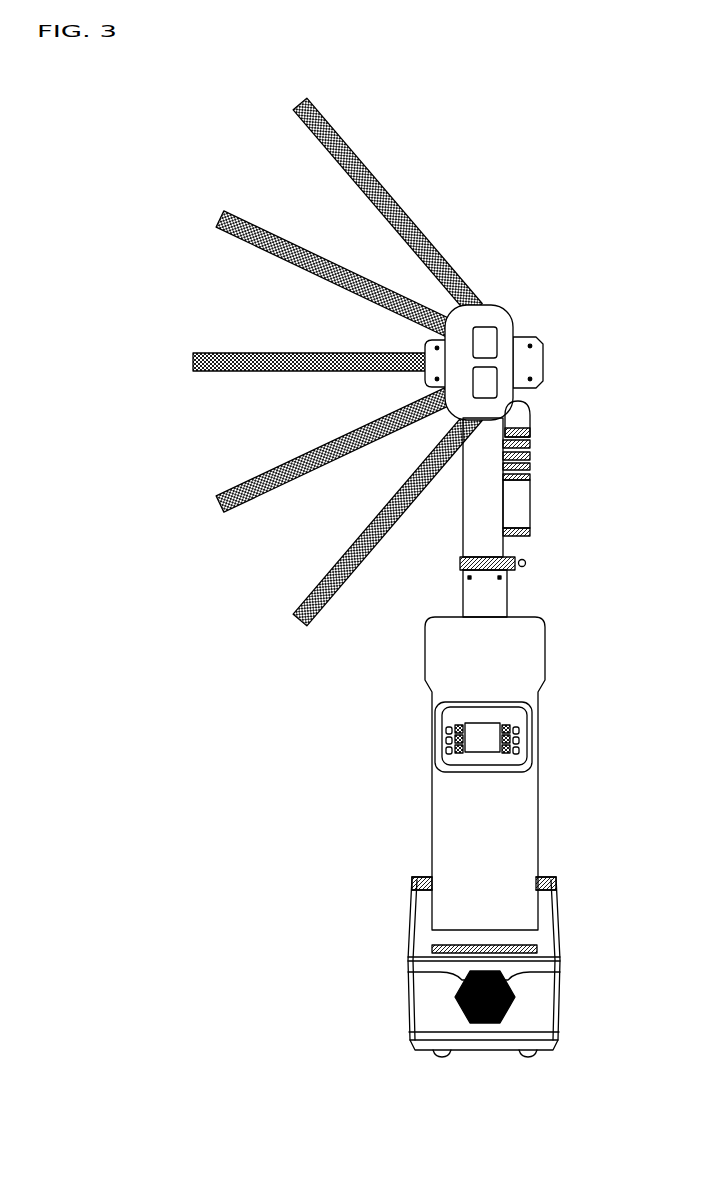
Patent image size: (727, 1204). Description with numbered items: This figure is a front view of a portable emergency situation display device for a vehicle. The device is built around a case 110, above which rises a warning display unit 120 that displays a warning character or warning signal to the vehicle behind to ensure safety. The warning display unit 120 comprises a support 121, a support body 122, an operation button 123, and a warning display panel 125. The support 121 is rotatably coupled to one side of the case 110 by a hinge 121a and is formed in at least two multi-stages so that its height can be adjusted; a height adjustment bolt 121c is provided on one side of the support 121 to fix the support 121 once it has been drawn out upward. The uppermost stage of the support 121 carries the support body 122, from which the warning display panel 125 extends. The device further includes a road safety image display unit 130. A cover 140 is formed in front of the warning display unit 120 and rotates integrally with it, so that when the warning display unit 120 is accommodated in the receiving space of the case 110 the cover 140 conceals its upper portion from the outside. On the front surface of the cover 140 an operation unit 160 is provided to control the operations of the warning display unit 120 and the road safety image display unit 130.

The case 110 is at (427, 998).
The warning display unit 120 is at (538, 320).
The support 121 is at (490, 496).
The hinge 121a is at (533, 362).
The height adjustment bolt 121c is at (527, 562).
The support body 122 is at (488, 305).
The operation button 123 is at (490, 342).
The warning display panel 125 is at (385, 193).
The road safety image display unit 130 is at (520, 446).
The cover 140 is at (458, 820).
The operation unit 160 is at (450, 734).